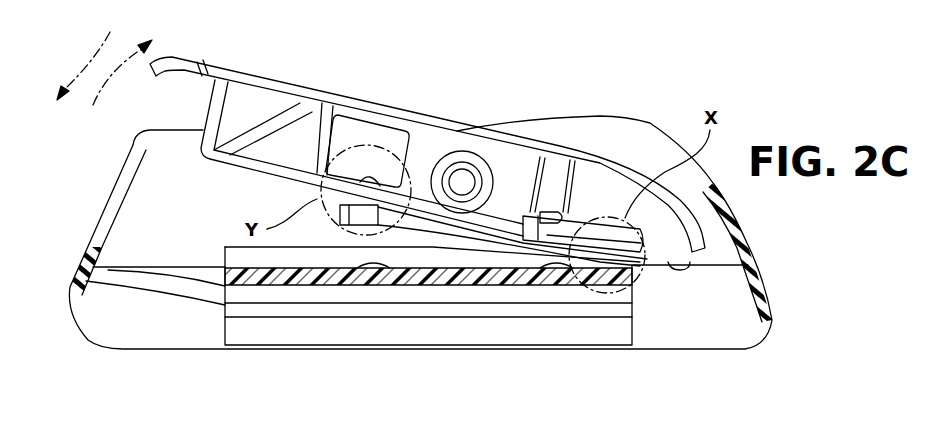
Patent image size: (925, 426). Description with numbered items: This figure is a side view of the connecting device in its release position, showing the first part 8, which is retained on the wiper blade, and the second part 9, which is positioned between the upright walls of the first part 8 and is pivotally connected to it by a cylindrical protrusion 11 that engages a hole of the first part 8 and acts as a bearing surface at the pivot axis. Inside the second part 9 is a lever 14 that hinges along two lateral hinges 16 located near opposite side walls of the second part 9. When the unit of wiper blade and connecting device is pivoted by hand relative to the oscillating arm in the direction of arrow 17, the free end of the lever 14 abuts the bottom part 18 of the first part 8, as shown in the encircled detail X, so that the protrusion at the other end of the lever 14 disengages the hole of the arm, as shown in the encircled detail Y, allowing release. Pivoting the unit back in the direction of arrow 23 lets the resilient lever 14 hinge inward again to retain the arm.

The first part 8 is at (110, 328).
The second part 9 is at (312, 98).
The cylindrical protrusion 11 is at (460, 172).
The lever 14 is at (608, 266).
The lateral hinge 16 is at (540, 217).
The arrow 17 is at (100, 88).
The bottom part 18 is at (605, 287).
The arrow 23 is at (83, 56).